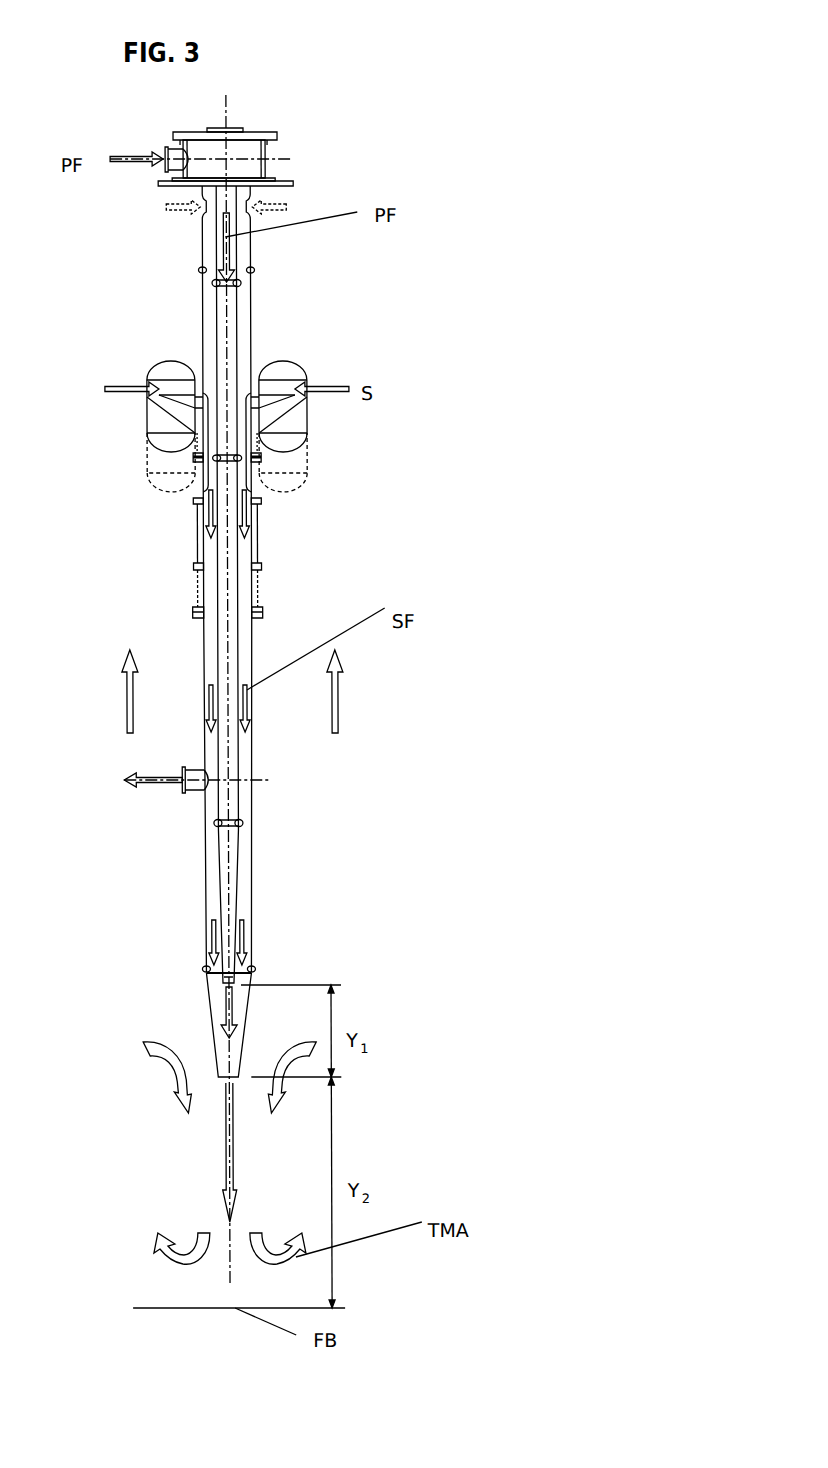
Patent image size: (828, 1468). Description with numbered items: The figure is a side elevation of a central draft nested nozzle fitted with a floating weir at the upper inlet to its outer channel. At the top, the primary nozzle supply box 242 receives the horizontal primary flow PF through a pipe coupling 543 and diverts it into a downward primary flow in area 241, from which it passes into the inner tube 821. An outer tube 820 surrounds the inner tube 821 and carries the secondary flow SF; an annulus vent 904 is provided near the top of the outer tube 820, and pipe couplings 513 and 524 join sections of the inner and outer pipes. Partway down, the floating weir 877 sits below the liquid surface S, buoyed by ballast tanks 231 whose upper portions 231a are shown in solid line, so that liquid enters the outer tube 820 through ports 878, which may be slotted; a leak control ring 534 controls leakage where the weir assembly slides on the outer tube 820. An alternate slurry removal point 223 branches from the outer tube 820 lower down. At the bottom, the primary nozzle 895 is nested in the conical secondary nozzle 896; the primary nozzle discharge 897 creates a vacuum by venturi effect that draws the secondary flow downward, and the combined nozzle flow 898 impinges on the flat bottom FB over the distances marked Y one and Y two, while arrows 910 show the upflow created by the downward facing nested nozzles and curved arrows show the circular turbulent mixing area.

The primary nozzle supply box 242 is at (212, 135).
The area of downward primary flow 241 is at (217, 148).
The pipe coupling 543 is at (165, 170).
The annulus vent 904 is at (202, 210).
The pipe coupling 524 is at (200, 270).
The pipe coupling 513 is at (214, 285).
The outer tube 820 is at (253, 263).
The inner tube 821 is at (239, 322).
The weir 877 is at (296, 393).
The ports 878 is at (201, 408).
The ballast tank upper portion 231a is at (166, 423).
The ballast tank 231 is at (161, 488).
The leak control ring 534 is at (262, 456).
The alternate slurry removal point 223 is at (179, 768).
The upflow arrows 910 is at (333, 697).
The primary nozzle 895 is at (251, 966).
The secondary nozzle 896 is at (242, 1070).
The primary nozzle discharge 897 is at (226, 1027).
The combined nozzle flow 898 is at (233, 1162).